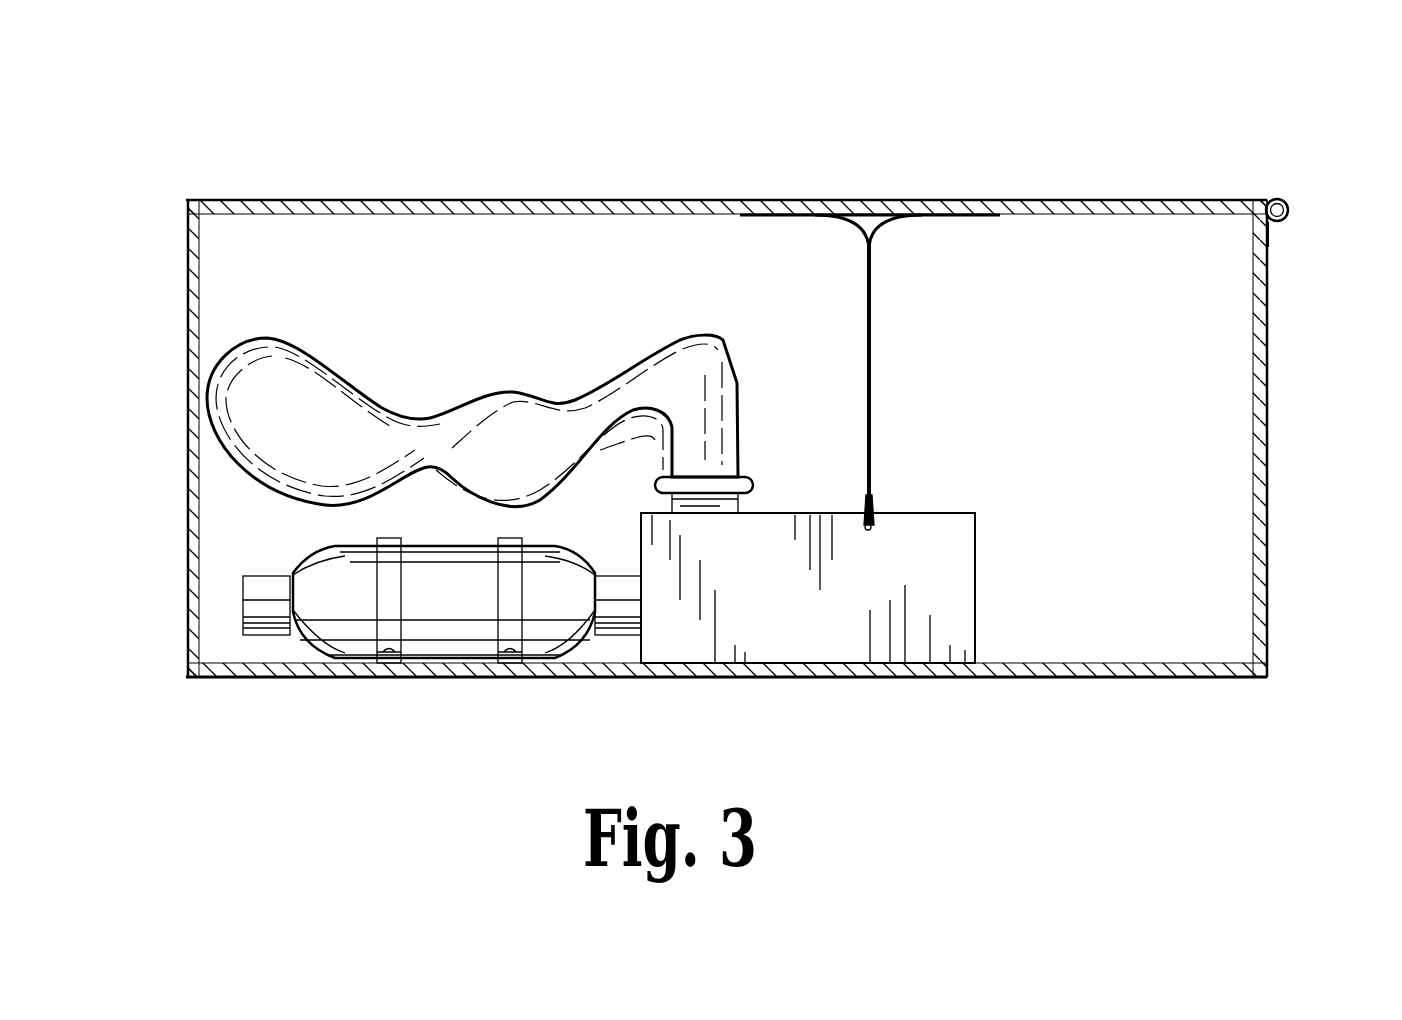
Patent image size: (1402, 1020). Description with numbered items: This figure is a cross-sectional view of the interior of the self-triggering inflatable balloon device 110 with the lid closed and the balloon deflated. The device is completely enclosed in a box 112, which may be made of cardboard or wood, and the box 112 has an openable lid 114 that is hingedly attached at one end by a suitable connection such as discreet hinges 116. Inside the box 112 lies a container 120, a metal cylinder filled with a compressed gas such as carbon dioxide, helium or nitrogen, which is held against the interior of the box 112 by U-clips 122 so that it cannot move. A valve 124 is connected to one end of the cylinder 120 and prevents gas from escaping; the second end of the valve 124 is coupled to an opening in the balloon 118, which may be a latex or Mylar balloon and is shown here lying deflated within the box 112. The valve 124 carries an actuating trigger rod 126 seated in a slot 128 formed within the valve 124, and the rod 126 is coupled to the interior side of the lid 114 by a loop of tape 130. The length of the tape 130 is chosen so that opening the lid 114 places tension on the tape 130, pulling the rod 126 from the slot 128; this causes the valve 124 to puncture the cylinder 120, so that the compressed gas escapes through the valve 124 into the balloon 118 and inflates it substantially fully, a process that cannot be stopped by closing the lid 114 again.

The self-triggering inflatable balloon device 110 is at (266, 101).
The box 112 is at (272, 678).
The lid 114 is at (385, 200).
The hinges 116 is at (1285, 204).
The balloon 118 is at (222, 360).
The container 120 is at (552, 657).
The U-clips 122 is at (500, 612).
The valve 124 is at (958, 512).
The actuating trigger rod 126 is at (874, 527).
The slot 128 is at (873, 530).
The loop of tape 130 is at (874, 332).